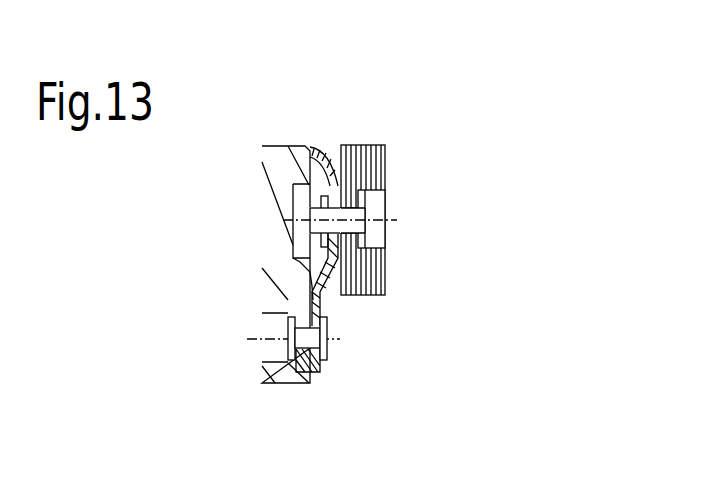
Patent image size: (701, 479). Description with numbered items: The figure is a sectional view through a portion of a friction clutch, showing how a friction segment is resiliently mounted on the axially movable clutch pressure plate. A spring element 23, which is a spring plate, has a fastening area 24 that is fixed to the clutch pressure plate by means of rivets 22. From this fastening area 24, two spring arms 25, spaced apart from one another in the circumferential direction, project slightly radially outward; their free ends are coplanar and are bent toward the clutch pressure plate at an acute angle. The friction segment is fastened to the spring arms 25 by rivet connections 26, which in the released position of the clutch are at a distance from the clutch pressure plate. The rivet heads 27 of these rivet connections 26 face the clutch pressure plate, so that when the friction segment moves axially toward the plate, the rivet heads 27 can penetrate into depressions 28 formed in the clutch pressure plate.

The spring arms 25 is at (293, 184).
The rivet heads 27 is at (321, 212).
The depressions 28 is at (298, 240).
The spring element 23 is at (315, 298).
The rivet connections 26 is at (348, 228).
The rivets 22 is at (328, 350).
The fastening area 24 is at (316, 372).